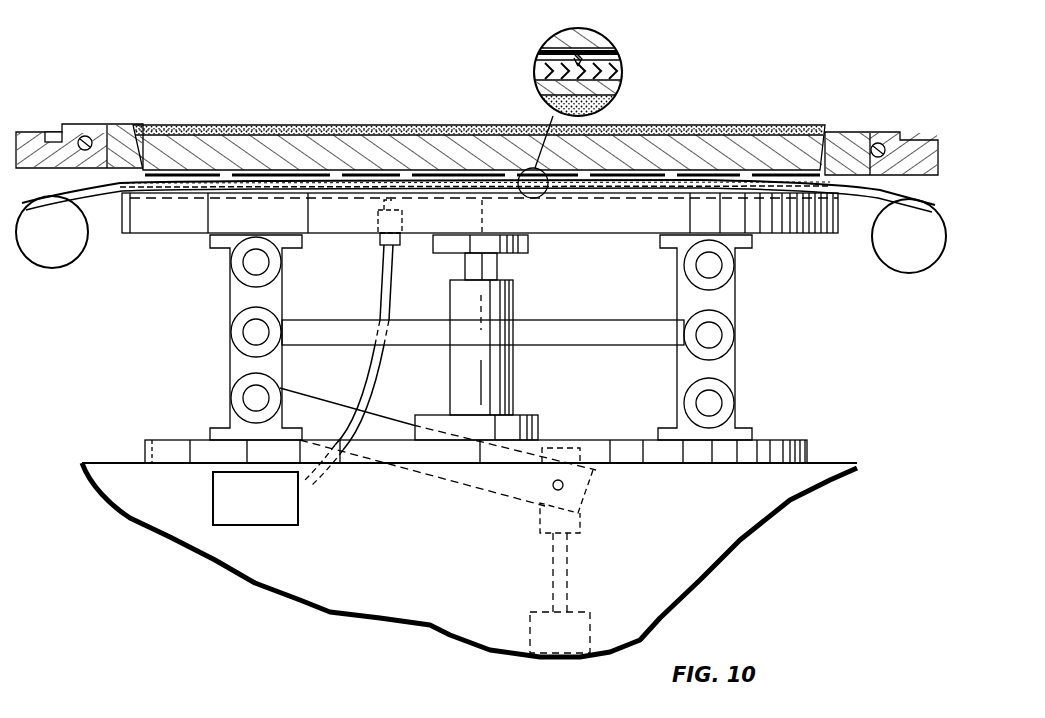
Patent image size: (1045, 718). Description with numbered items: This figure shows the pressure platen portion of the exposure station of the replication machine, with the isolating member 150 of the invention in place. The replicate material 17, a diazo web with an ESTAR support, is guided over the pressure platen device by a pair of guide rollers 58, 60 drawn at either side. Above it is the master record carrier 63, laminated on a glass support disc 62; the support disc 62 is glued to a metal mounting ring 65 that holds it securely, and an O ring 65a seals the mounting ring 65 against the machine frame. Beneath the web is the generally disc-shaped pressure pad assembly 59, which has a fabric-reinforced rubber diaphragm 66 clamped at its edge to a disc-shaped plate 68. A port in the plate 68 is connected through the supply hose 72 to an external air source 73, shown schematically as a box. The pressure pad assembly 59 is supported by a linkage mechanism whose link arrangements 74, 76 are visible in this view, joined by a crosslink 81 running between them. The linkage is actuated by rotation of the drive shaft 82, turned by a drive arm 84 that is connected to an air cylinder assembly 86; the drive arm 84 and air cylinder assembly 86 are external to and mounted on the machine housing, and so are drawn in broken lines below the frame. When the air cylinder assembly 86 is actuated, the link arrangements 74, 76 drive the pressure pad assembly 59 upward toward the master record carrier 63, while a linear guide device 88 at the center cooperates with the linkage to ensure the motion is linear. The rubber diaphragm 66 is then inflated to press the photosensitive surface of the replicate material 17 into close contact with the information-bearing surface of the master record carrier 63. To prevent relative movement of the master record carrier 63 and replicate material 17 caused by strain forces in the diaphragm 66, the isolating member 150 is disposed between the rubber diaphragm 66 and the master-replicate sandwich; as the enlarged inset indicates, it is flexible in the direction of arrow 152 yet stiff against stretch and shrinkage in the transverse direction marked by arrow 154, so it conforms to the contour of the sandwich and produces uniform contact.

The replicate material 17 is at (165, 182).
The guide roller 58 is at (60, 258).
The pressure pad assembly 59 is at (165, 266).
The guide roller 60 is at (918, 270).
The glass support disc 62 is at (742, 145).
The master record carrier 63 is at (617, 177).
The metal mounting ring 65 is at (120, 118).
The O ring 65a is at (881, 134).
The rubber diaphragm 66 is at (356, 190).
The disc-shaped plate 68 is at (623, 197).
The supply hose 72 is at (378, 380).
The air source 73 is at (290, 526).
The link arrangement 74 is at (232, 288).
The link arrangement 76 is at (737, 300).
The crosslink 81 is at (590, 340).
The drive shaft 82 is at (250, 402).
The drive arm 84 is at (525, 492).
The air cylinder assembly 86 is at (590, 617).
The linear guide device 88 is at (513, 306).
The isolating member 150 is at (457, 183).
The arrow 152 is at (229, 72).
The horizontal motion 154 is at (243, 50).